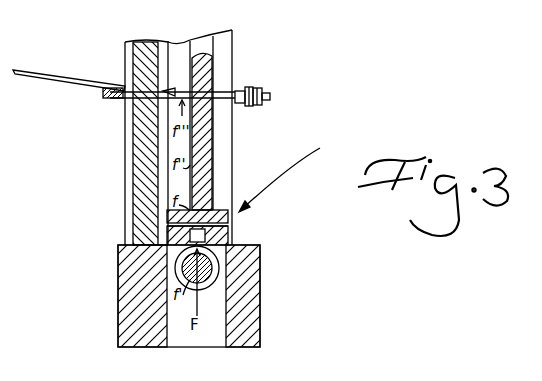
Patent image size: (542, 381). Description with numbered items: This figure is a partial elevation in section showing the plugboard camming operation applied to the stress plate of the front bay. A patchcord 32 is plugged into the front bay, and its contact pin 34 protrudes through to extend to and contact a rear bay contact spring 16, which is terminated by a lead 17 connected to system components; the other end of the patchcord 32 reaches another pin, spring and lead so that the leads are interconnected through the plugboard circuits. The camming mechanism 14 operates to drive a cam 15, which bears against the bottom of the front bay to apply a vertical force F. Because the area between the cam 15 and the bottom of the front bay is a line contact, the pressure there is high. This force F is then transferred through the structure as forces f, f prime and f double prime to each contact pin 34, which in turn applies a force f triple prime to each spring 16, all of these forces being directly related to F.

The camming mechanism 14 is at (210, 328).
The cam 15 is at (232, 243).
The rear bay contact spring 16 is at (137, 110).
The lead 17 is at (92, 80).
The patchcord 32 is at (268, 95).
The contact pin 34 is at (193, 90).